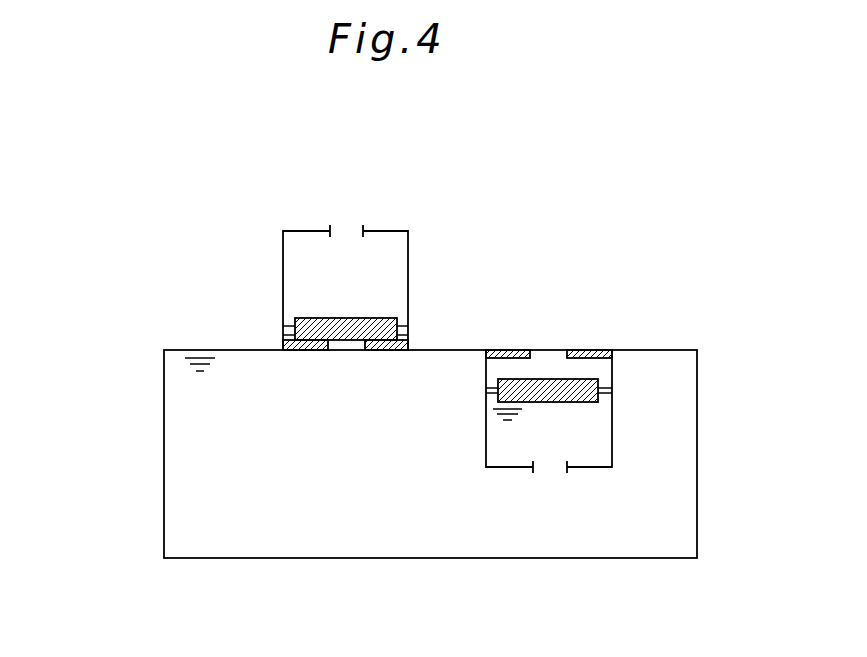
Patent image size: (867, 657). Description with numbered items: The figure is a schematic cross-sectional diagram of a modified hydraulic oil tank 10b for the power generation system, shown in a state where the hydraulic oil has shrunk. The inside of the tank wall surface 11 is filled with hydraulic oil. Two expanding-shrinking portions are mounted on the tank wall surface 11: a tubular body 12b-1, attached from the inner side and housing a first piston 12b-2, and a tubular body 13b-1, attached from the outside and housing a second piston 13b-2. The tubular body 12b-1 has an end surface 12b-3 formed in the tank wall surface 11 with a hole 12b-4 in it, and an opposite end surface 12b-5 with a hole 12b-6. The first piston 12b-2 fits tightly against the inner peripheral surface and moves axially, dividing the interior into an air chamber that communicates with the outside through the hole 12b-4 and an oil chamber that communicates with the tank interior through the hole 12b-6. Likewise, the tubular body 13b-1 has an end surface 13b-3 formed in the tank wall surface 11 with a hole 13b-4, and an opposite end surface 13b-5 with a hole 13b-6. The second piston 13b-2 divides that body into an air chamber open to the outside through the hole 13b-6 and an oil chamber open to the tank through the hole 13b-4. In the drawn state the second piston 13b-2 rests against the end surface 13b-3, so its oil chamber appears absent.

The hydraulic oil tank 10b is at (127, 255).
The tank wall surface 11 is at (164, 530).
The tubular body (first expanding-shrinking portion) 12b-1 is at (612, 400).
The first piston 12b-2 is at (577, 393).
The end surface 12b-3 is at (573, 352).
The hole (first opening) 12b-4 is at (554, 340).
The end surface 12b-5 is at (503, 470).
The hole (fifth opening) 12b-6 is at (555, 484).
The tubular body (second expanding-shrinking portion) 13b-1 is at (283, 316).
The second piston 13b-2 is at (325, 325).
The end surface 13b-3 is at (388, 348).
The hole (second opening) 13b-4 is at (347, 360).
The end surface 13b-5 is at (382, 232).
The hole (sixth opening) 13b-6 is at (345, 216).